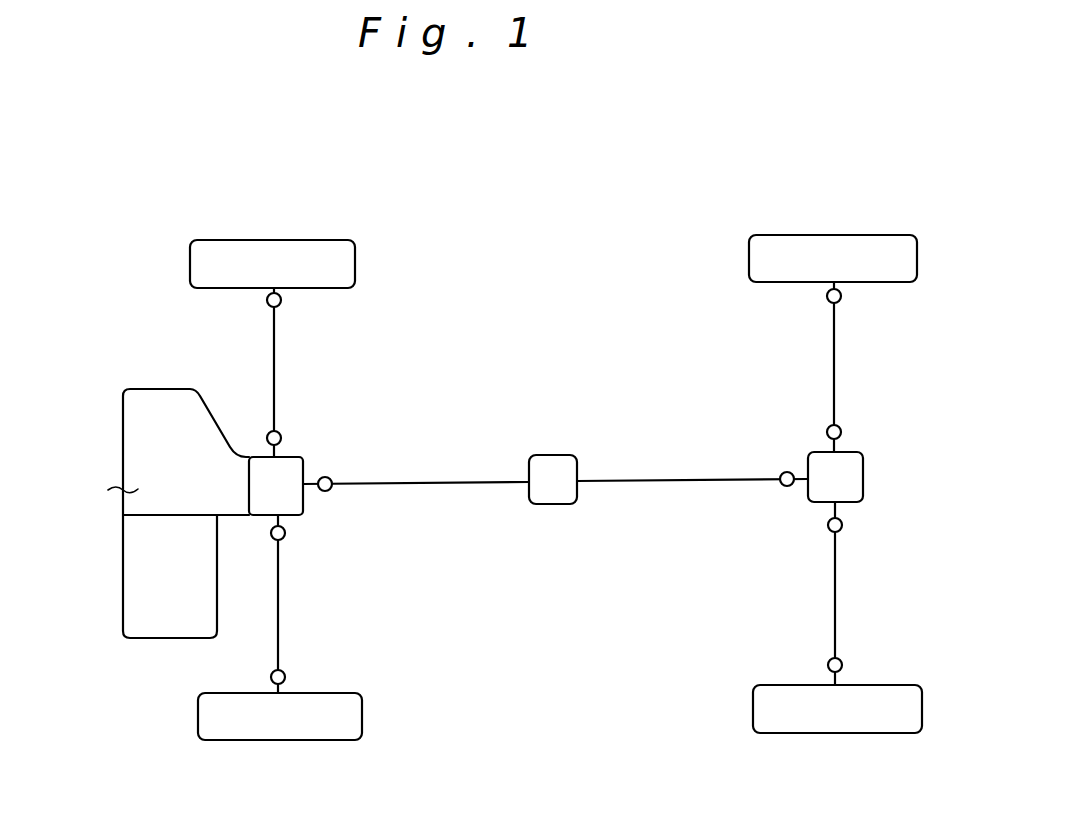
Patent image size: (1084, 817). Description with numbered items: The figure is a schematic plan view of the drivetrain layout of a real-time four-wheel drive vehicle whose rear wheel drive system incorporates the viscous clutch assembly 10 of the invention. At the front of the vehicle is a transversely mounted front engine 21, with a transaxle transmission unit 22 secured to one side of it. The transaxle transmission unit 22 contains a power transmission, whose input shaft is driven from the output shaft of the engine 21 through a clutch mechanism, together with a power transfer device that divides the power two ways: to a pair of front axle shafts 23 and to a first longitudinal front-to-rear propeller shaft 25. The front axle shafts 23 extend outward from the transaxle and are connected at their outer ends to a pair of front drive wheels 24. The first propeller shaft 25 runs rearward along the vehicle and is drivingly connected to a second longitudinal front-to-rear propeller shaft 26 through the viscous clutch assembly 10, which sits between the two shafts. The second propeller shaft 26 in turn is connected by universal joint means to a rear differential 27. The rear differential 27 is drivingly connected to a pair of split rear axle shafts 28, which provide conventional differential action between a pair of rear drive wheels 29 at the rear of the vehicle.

The viscous clutch assembly 10 is at (551, 465).
The front engine 21 is at (172, 630).
The transaxle transmission unit 22 is at (187, 452).
The front axle shafts 23 is at (275, 360).
The front drive wheels 24 is at (330, 243).
The first longitudinal front-to-rear propeller shaft 25 is at (414, 482).
The second longitudinal front-to-rear propeller shaft 26 is at (682, 482).
The rear differential 27 is at (852, 465).
The split rear axle shafts 28 is at (835, 355).
The rear drive wheels 29 is at (880, 247).